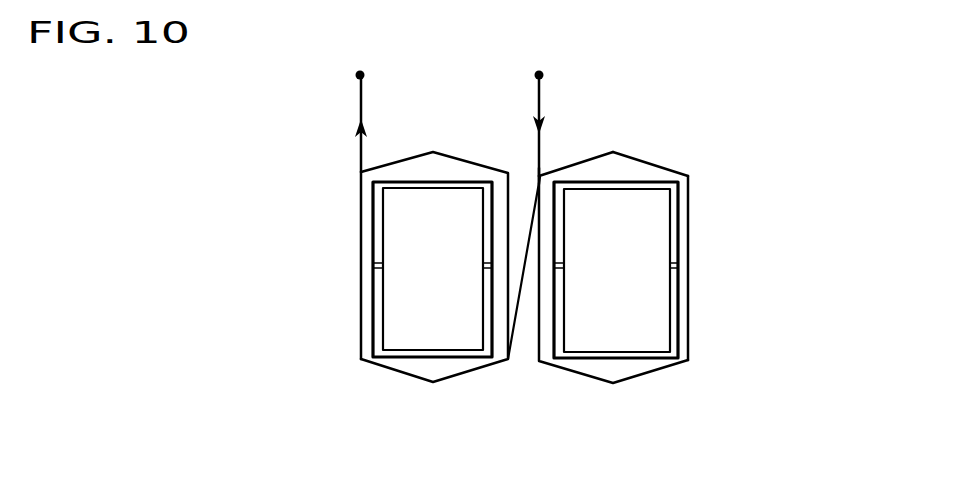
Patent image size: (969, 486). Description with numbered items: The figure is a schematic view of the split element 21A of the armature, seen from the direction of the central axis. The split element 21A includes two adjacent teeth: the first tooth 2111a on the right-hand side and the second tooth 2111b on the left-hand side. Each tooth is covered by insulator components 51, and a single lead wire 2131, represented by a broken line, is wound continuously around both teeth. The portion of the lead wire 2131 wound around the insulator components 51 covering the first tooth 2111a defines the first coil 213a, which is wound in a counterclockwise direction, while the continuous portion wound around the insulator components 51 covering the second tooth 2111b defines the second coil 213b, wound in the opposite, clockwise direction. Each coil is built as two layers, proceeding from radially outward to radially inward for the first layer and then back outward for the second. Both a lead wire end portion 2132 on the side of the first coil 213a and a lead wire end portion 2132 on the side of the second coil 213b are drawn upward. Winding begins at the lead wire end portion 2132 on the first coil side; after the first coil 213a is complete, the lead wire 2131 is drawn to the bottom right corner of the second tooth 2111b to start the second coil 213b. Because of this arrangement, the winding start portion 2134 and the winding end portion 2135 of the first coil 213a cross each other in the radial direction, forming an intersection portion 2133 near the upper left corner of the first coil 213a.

The split element 21A is at (240, 170).
The first coil 213a is at (638, 392).
The second coil 213b is at (452, 390).
The lead wire 2131 is at (690, 335).
The first tooth 2111a is at (698, 258).
The second tooth 2111b is at (325, 270).
The winding start portion 2134 is at (545, 162).
The winding end portion 2135 is at (532, 185).
The intersection portion 2133 is at (535, 165).
The lead wire end portion 2132 is at (356, 74).
The insulator components 51 is at (372, 200).